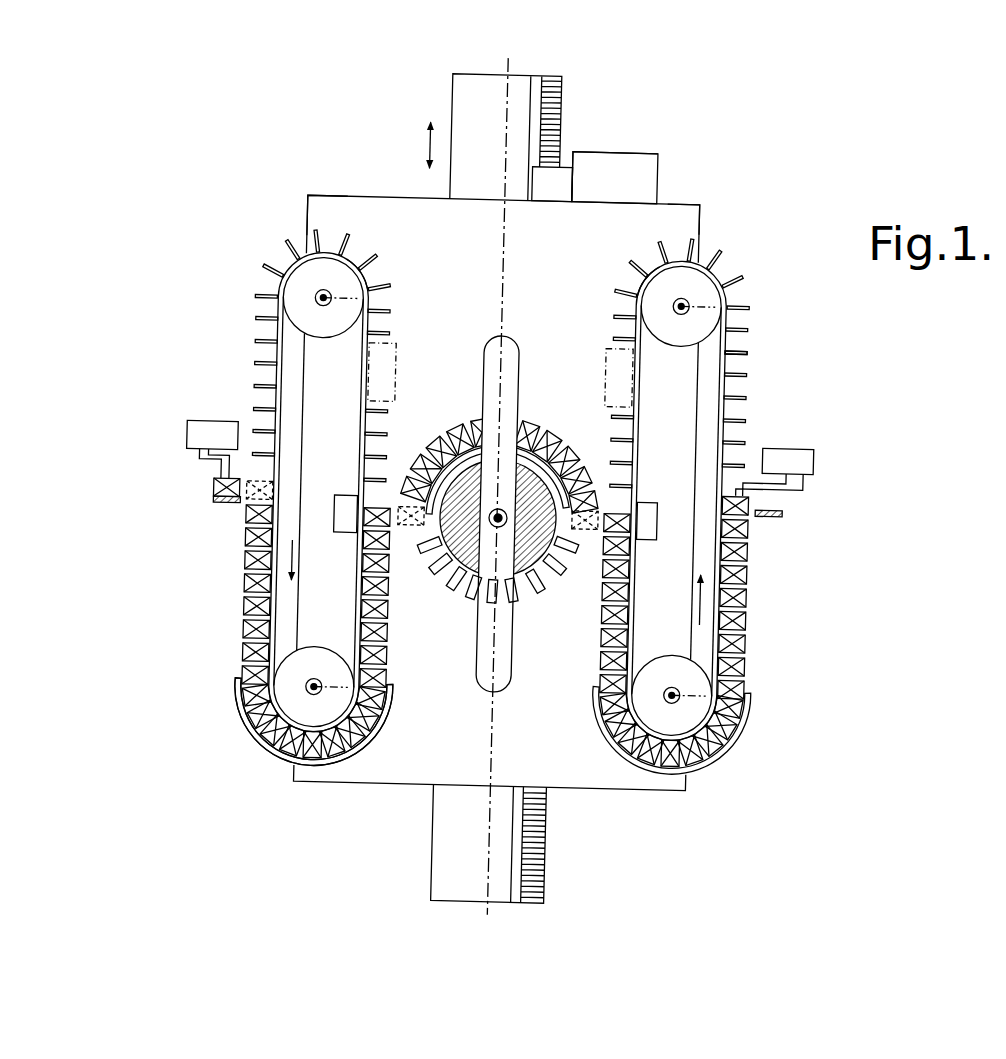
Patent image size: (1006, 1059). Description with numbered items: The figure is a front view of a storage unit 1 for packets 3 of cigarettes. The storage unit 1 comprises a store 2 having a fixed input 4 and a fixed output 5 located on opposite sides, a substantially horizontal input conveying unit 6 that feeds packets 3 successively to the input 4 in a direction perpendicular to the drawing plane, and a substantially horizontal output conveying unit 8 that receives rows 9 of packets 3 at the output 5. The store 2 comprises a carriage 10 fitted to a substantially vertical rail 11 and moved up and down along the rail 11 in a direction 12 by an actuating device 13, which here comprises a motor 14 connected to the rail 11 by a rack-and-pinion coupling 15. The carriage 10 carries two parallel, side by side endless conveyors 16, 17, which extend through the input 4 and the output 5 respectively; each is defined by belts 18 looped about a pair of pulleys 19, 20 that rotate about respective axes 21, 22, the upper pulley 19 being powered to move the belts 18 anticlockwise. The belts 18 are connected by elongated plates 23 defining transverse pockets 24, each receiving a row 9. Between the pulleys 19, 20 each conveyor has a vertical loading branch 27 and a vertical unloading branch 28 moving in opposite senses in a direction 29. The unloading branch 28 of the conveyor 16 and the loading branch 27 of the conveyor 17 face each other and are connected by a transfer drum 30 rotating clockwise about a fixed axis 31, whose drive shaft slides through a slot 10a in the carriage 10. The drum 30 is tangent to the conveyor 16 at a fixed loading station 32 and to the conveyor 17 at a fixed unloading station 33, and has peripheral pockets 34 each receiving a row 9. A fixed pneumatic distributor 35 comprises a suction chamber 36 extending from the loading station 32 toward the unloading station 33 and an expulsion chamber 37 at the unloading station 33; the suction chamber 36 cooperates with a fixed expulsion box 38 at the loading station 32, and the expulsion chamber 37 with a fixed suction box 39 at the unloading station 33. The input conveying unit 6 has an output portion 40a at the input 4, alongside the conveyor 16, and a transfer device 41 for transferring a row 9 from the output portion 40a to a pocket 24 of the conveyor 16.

The storage unit 1 is at (697, 173).
The store 2 is at (317, 196).
The packets 3 is at (267, 739).
The input 4 is at (250, 516).
The output 5 is at (758, 514).
The input conveying unit 6 is at (211, 495).
The output conveying unit 8 is at (807, 482).
The rows 9 is at (753, 590).
The carriage 10 is at (365, 213).
The slot 10a is at (496, 372).
The rail 11 is at (478, 97).
The direction 12 is at (408, 120).
The actuating device 13 is at (613, 149).
The motor 14 is at (632, 182).
The rack-and-pinion coupling 15 is at (551, 159).
The conveyor 16 is at (257, 304).
The conveyor 17 is at (749, 338).
The belts 18 is at (340, 278).
The pulley 19 is at (316, 292).
The pulley 20 is at (323, 722).
The axis 21 is at (368, 306).
The axis 22 is at (310, 688).
The plates 23 is at (255, 348).
The pockets 24 is at (265, 411).
The loading branch 27 is at (281, 388).
The unloading branch 28 is at (388, 360).
The direction 29 is at (296, 566).
The transfer drum 30 is at (480, 602).
The axis 31 is at (558, 431).
The loading station 32 is at (397, 470).
The unloading station 33 is at (601, 494).
The peripheral pockets 34 is at (524, 609).
The pneumatic distributor 35 is at (469, 471).
The suction chamber 36 is at (529, 459).
The expulsion chamber 37 is at (583, 526).
The expulsion box 38 is at (343, 509).
The suction box 39 is at (650, 525).
The output portion 40a is at (212, 505).
The transfer device 41 is at (184, 441).